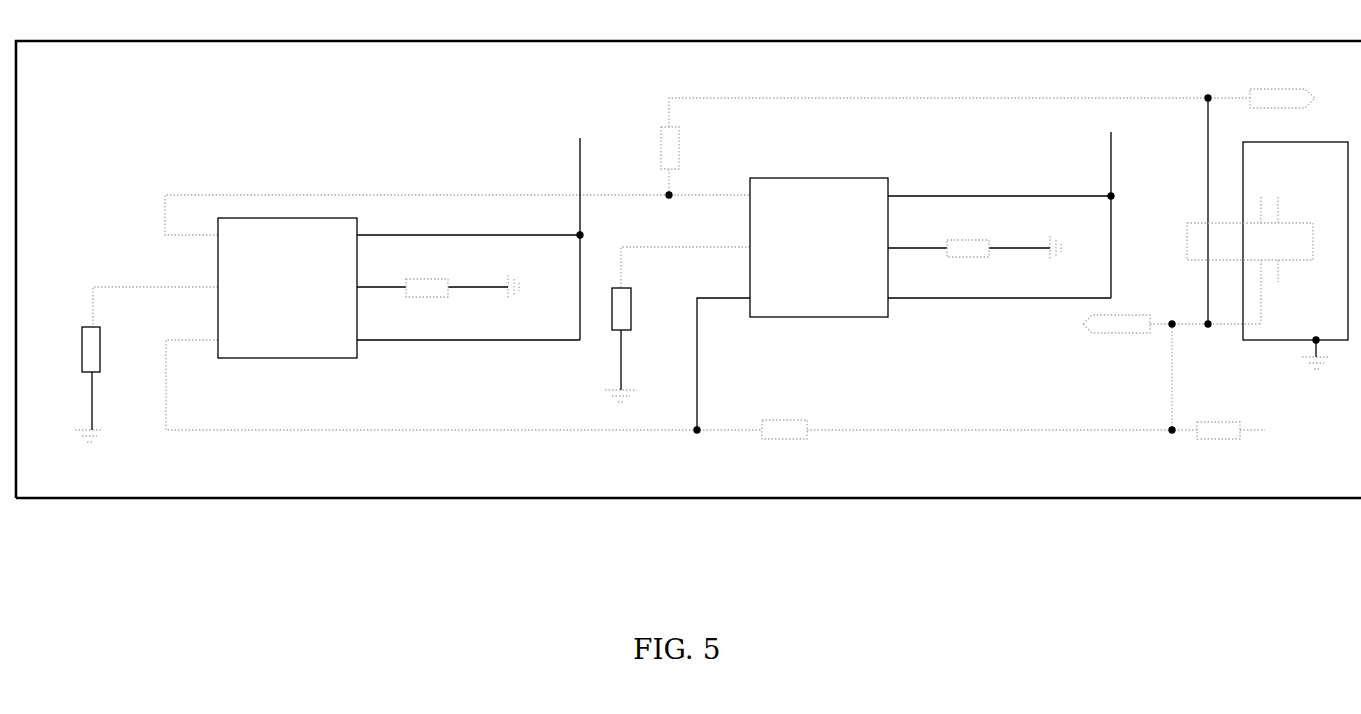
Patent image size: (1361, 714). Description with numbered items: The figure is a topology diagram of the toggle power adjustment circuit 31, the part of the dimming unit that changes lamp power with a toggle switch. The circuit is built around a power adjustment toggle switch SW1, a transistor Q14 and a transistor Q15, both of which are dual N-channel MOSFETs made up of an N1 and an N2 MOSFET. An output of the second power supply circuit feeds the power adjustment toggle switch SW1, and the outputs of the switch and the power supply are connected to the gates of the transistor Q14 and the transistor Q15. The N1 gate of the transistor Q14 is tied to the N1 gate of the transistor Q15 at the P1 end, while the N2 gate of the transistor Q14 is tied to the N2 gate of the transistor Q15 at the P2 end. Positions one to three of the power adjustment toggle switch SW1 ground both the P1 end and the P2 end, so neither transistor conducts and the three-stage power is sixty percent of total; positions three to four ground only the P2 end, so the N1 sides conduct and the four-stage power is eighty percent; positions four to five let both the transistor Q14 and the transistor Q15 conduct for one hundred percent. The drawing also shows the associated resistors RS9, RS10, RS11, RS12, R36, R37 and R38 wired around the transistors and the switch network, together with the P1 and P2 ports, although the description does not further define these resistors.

The toggle power adjustment circuit 31 is at (688, 312).
The transistor Q14 is at (295, 287).
The transistor Q15 is at (833, 247).
The resistor 2.7R/1206 RS9 is at (121, 369).
The resistor 2.4R/1206 RS10 is at (439, 287).
The resistor 2.7R/1206 RS11 is at (652, 329).
The resistor 2.4R/1206 RS12 is at (981, 248).
The resistor 20K R36 is at (1219, 428).
The resistor 1K R37 is at (785, 429).
The resistor 1K R38 is at (681, 148).
The power adjustment toggle switch SW1 is at (1267, 249).
The P1 end P1 is at (1282, 98).
The P2 end P2 is at (1116, 324).